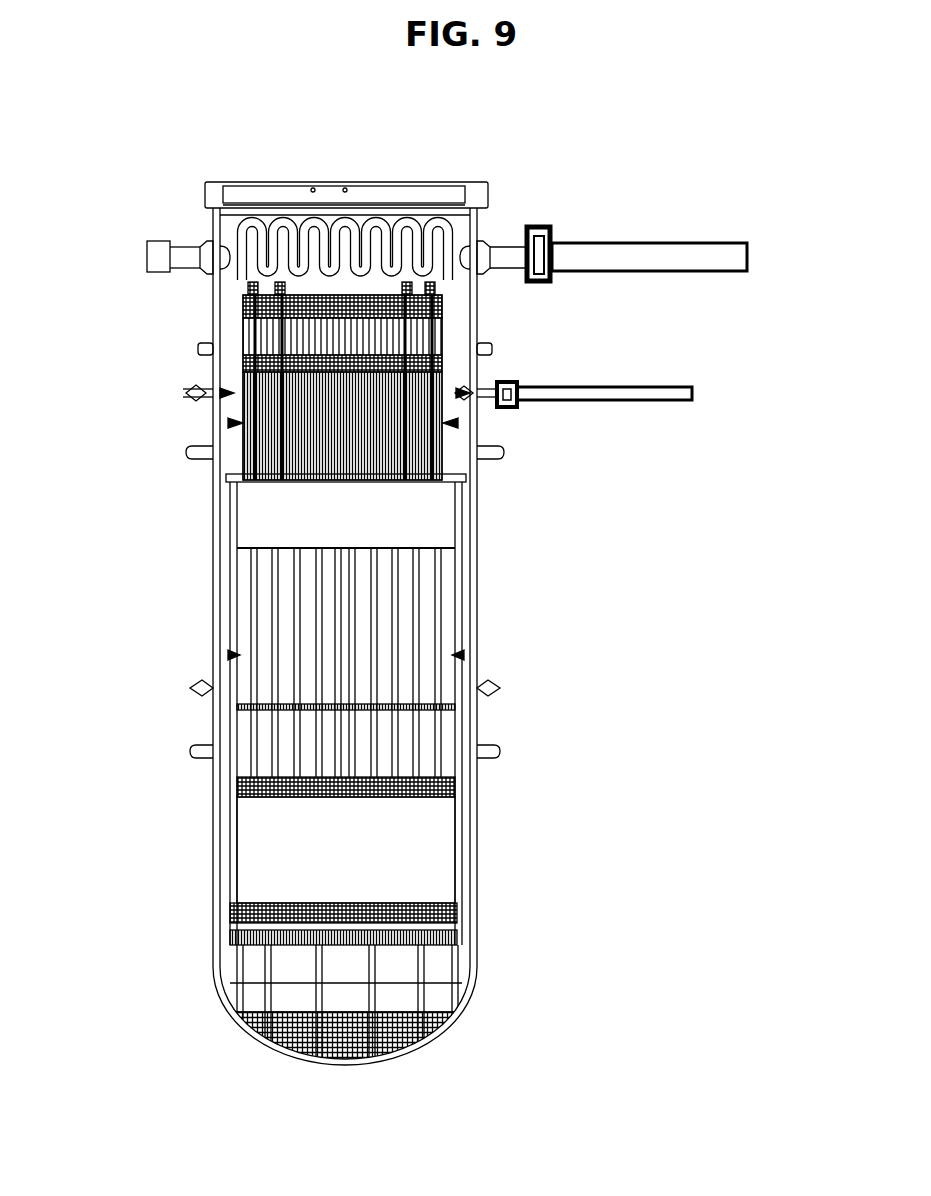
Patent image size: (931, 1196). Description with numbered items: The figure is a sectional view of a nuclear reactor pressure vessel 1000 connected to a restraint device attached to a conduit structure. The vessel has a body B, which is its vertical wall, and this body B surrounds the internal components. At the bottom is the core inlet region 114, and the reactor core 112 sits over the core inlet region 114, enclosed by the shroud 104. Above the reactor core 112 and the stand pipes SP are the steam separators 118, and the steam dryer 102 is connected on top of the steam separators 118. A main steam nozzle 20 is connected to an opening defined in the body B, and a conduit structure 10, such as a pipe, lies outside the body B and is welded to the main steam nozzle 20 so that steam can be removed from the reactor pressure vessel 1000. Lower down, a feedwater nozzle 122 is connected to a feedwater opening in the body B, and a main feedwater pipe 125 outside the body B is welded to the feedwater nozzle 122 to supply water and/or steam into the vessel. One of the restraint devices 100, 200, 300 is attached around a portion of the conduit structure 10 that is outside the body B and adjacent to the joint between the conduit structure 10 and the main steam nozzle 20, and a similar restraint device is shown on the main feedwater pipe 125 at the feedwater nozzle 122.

The nuclear reactor pressure vessel 1000 is at (140, 156).
The steam dryer 102 is at (398, 230).
The main steam nozzle 20 is at (490, 240).
The conduit structure 10 is at (580, 242).
The restraint device 100 is at (547, 228).
The restraint device 200 is at (517, 407).
The restraint device 300 is at (665, 431).
The steam separators 118 is at (452, 314).
The feedwater nozzle 122 is at (478, 392).
The main feedwater pipe 125 is at (615, 380).
The stand pipes SP is at (447, 462).
The body B is at (477, 623).
The shroud 104 is at (460, 843).
The reactor core 112 is at (250, 862).
The core inlet region 114 is at (222, 1011).